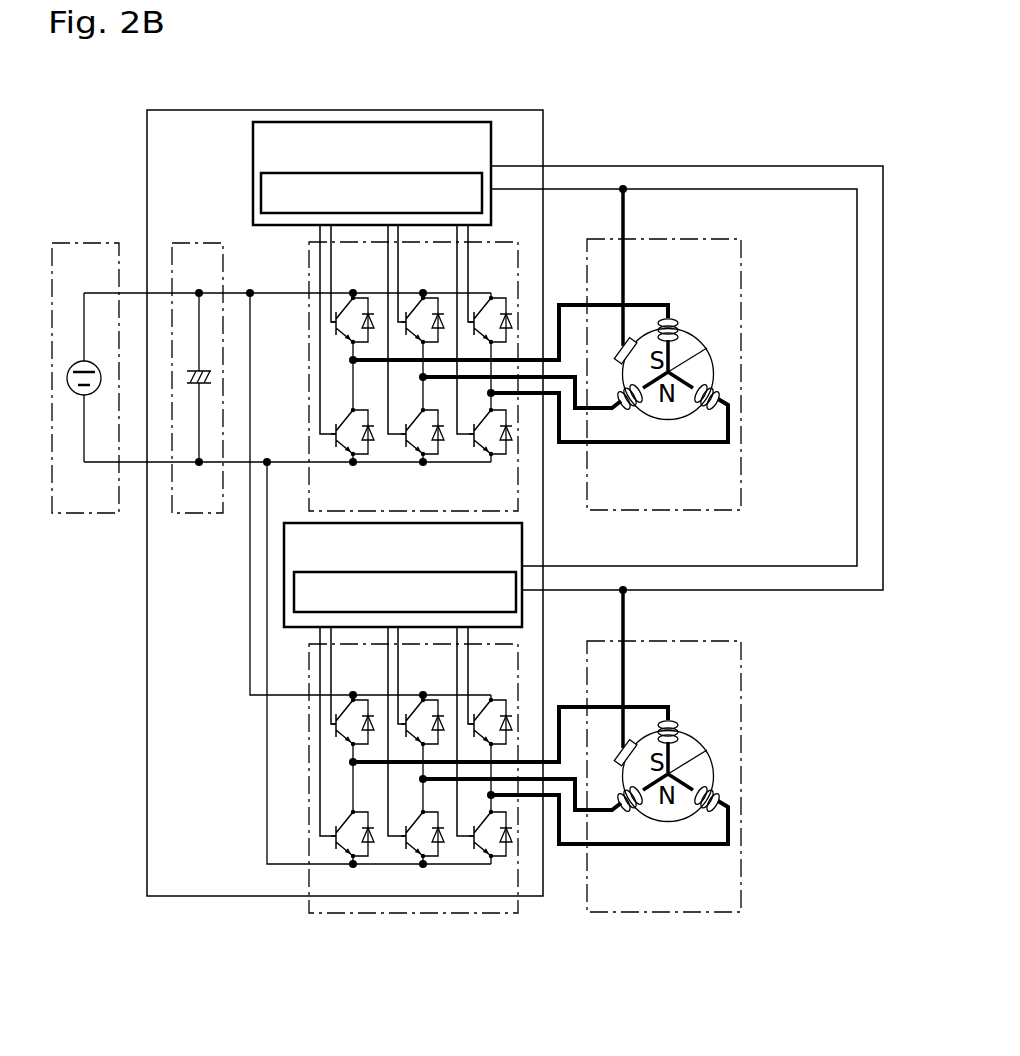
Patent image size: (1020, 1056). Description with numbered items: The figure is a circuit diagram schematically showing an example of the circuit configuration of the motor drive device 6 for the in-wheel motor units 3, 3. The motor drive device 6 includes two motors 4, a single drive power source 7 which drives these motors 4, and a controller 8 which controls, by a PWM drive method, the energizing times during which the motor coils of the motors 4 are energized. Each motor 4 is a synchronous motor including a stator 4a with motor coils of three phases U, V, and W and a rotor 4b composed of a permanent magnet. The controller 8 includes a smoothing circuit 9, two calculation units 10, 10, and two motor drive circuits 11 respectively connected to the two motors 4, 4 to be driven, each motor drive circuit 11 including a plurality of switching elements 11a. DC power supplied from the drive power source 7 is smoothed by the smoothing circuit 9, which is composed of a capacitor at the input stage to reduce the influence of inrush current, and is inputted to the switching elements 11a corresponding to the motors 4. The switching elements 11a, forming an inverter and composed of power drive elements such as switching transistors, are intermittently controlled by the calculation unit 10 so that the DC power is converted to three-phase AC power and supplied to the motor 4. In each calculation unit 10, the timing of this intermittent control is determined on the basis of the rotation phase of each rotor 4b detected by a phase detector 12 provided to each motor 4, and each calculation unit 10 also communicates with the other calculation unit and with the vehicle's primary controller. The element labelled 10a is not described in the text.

The in-wheel motor unit 3 is at (719, 597).
The motor 4 is at (733, 570).
The stator 4a is at (718, 397).
The rotor 4b is at (700, 372).
The motor drive device 6 is at (663, 80).
The drive power source 7 is at (88, 503).
The controller 8 is at (330, 110).
The smoothing circuit 9 is at (183, 504).
The calculation unit 10 is at (253, 163).
The phase shift unit 10a is at (261, 195).
The motor drive circuit 11 is at (472, 560).
The switching element 11a is at (412, 449).
The phase detector 12 is at (632, 343).